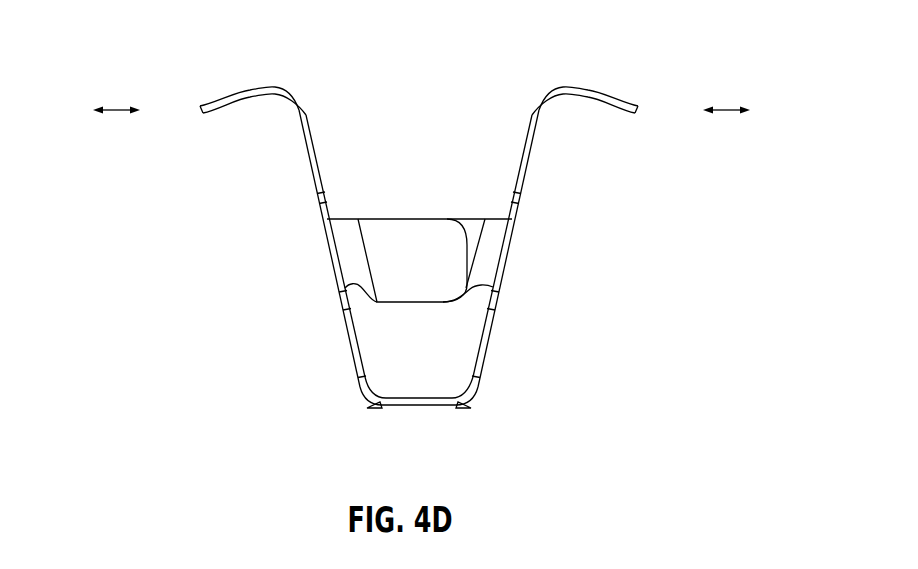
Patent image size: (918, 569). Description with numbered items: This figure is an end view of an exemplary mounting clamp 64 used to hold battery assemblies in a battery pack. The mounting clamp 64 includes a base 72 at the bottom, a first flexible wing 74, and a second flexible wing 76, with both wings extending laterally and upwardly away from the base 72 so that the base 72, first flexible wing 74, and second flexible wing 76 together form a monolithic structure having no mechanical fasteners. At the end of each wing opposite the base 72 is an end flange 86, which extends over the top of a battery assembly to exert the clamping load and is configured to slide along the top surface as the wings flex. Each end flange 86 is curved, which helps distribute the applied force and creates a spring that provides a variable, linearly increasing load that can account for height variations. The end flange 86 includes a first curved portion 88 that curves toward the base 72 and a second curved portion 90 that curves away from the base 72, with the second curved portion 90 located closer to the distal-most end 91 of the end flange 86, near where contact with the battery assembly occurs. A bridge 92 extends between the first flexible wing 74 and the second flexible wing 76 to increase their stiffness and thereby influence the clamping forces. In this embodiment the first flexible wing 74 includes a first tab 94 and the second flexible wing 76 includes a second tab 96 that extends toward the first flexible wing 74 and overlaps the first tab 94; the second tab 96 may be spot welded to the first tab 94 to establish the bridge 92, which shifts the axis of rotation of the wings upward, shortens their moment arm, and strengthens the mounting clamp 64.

The mounting clamp 64 is at (306, 251).
The base 72 is at (427, 413).
The first flexible wing 74 is at (335, 324).
The second flexible wing 76 is at (495, 331).
The end flange 86 is at (258, 80).
The first curved portion 88 is at (291, 88).
The second curved portion 90 is at (212, 117).
The distal-most end 91 is at (203, 110).
The bridge 92 is at (405, 181).
The first tab 94 is at (383, 233).
The second tab 96 is at (487, 228).